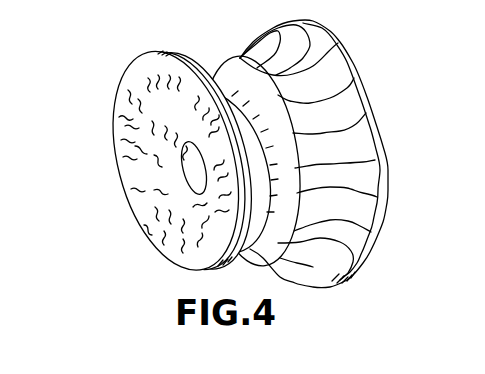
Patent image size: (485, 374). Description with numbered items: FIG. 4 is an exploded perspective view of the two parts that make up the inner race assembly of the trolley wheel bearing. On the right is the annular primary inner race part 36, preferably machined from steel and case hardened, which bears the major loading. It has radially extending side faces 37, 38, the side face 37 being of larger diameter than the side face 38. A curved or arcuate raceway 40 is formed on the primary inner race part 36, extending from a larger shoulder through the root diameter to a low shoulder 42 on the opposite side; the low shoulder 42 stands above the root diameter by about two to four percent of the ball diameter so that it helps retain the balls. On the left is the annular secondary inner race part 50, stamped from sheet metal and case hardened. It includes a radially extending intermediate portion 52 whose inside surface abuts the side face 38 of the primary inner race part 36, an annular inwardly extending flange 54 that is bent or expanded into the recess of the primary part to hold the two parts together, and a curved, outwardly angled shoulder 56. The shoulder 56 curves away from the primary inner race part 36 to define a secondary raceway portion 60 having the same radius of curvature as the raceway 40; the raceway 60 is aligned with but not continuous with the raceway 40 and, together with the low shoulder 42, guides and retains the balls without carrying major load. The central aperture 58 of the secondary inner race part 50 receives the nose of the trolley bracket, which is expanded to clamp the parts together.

The primary inner race part 36 is at (287, 144).
The side face 37 is at (382, 113).
The side face 38 is at (225, 75).
The raceway 40 is at (340, 73).
The low shoulder 42 is at (240, 57).
The secondary inner race part 50 is at (167, 152).
The intermediate portion 52 is at (116, 112).
The flange 54 is at (240, 252).
The shoulder 56 is at (125, 103).
The central aperture 58 is at (167, 183).
The secondary raceway portion 60 is at (158, 51).